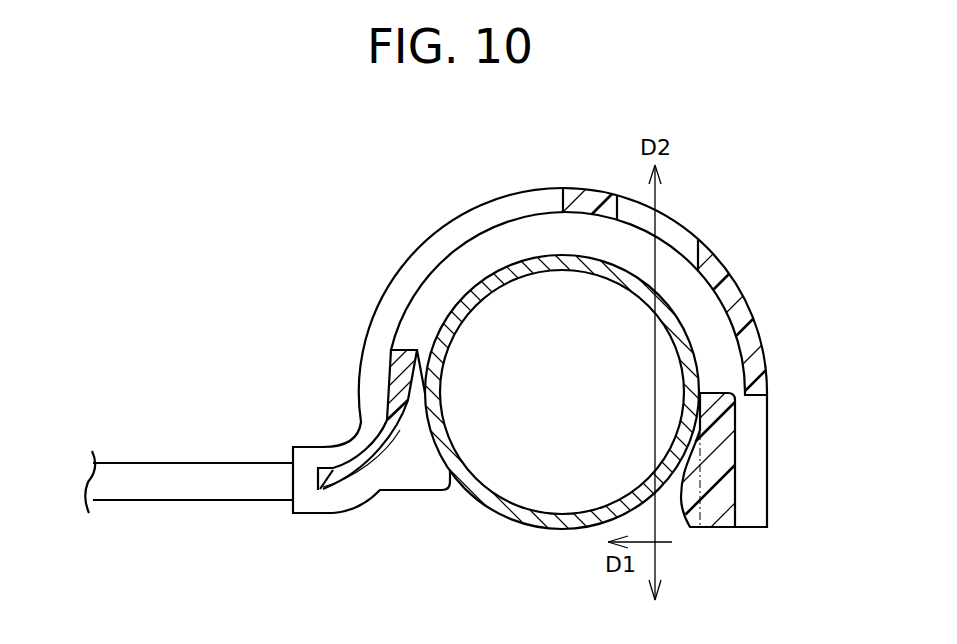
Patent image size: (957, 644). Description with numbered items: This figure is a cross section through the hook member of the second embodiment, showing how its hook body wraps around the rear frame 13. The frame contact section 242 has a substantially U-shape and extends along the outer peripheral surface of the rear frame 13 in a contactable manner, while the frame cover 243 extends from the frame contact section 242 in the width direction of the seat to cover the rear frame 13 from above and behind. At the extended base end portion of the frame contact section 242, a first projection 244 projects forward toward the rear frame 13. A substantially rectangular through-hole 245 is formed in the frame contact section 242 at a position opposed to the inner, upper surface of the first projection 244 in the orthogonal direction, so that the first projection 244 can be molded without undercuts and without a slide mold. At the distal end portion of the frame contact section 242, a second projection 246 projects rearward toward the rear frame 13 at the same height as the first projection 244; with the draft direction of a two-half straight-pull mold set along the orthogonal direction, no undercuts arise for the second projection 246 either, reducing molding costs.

The frame contact section 242 is at (400, 241).
The frame cover 243 is at (748, 278).
The first projection 244 is at (690, 495).
The through-hole 245 is at (698, 247).
The second projection 246 is at (418, 468).
The rear frame 13 is at (509, 522).